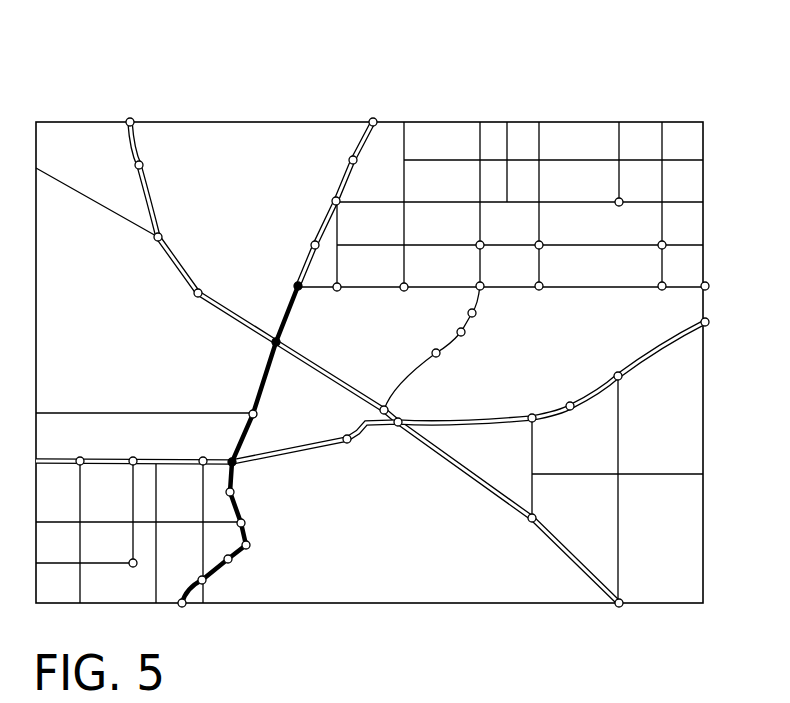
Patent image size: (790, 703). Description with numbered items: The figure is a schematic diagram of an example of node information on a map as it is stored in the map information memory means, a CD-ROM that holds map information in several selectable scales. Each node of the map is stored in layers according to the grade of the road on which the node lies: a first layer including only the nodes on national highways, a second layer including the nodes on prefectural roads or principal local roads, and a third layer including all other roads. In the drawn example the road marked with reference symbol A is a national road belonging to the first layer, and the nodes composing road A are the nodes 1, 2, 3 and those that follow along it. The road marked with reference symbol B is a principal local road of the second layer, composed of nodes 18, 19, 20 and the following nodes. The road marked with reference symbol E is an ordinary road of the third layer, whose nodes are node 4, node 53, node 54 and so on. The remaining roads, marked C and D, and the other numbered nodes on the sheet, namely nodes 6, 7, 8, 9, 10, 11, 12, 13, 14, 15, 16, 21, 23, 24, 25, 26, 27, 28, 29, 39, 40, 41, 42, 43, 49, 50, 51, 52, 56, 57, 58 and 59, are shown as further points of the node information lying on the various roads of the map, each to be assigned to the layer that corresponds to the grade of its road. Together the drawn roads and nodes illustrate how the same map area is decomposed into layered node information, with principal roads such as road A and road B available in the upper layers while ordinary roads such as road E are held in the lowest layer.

The node 1 is at (719, 278).
The node 2 is at (673, 271).
The node 3 is at (551, 271).
The node 4 is at (490, 273).
The node 6 is at (345, 275).
The node 7 is at (313, 302).
The node 8 is at (289, 332).
The node 9 is at (264, 405).
The node 10 is at (223, 444).
The node 11 is at (249, 488).
The node 12 is at (260, 520).
The node 13 is at (268, 543).
The node 14 is at (249, 567).
The node 15 is at (224, 590).
The node 16 is at (202, 619).
The node 18 is at (386, 105).
The node 19 is at (372, 163).
The node 20 is at (317, 189).
The node 21 is at (296, 232).
The node 23 is at (728, 318).
The node 24 is at (603, 361).
The node 25 is at (574, 425).
The node 26 is at (522, 402).
The node 27 is at (388, 438).
The node 28 is at (347, 458).
The node 29 is at (186, 446).
The node 39 is at (116, 446).
The node 40 is at (64, 446).
The node 41 is at (632, 619).
The node 42 is at (522, 536).
The node 43 is at (377, 391).
The node 49 is at (217, 277).
The node 50 is at (178, 224).
The node 51 is at (118, 167).
The node 52 is at (128, 104).
The node 53 is at (492, 315).
The node 54 is at (478, 346).
The node 56 is at (442, 371).
The node 57 is at (679, 232).
The node 58 is at (521, 232).
The node 59 is at (462, 232).
The national road A is at (290, 318).
The principal local road B is at (338, 178).
The road C is at (643, 355).
The road D is at (147, 168).
The ordinary road E is at (477, 302).